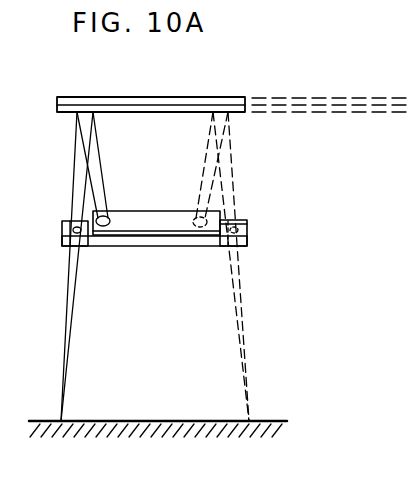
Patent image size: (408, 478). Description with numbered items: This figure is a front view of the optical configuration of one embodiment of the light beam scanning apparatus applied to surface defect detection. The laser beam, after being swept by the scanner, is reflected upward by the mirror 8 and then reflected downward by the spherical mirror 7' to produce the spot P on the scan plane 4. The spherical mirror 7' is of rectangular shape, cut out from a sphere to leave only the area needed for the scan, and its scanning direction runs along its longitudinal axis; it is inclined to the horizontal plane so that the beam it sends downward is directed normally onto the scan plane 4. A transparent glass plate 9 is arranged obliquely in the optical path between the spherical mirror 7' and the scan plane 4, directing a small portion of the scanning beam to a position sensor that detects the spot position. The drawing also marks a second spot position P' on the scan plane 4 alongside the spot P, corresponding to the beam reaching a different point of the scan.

The spherical mirror 7' is at (232, 87).
The mirror 8 is at (147, 210).
The transparent glass plate 9 is at (62, 238).
The scan plane 4 is at (139, 420).
The spot P is at (73, 407).
The displaced ground contact point P' is at (267, 407).